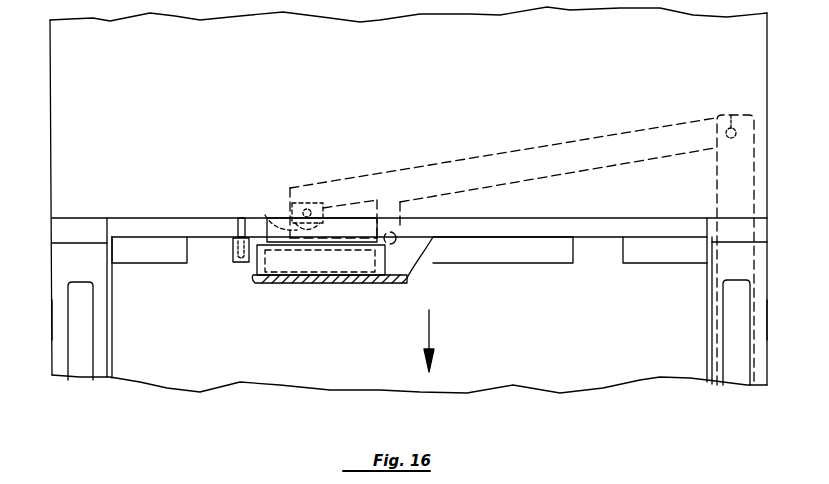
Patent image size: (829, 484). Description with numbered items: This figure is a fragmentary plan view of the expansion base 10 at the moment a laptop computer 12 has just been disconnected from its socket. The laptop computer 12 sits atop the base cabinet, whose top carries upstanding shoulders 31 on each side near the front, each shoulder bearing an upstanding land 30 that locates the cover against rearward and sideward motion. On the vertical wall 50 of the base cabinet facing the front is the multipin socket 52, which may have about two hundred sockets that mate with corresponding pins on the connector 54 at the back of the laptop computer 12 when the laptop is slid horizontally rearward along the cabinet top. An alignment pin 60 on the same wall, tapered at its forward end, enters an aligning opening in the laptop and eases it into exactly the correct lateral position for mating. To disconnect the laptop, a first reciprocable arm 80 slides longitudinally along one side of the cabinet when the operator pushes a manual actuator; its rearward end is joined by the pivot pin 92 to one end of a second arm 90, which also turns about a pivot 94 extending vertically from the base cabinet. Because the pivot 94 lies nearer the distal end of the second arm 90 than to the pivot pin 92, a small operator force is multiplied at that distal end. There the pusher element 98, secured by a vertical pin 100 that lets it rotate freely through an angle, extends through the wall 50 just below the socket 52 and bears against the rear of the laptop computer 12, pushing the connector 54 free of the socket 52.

The expansion base 10 is at (772, 60).
The laptop computer 12 is at (582, 351).
The upstanding lands 30 is at (80, 335).
The upstanding shoulders 31 is at (52, 322).
The vertical wall 50 is at (537, 219).
The multipin socket 52 is at (352, 228).
The connector 54 is at (325, 262).
The alignment pin 60 is at (236, 229).
The first reciprocable arm 80 is at (756, 192).
The second arm 90 is at (546, 148).
The pivot pin 92 is at (731, 112).
The pivot 94 is at (420, 266).
The pusher element 98 is at (277, 220).
The vertical pin 100 is at (306, 200).